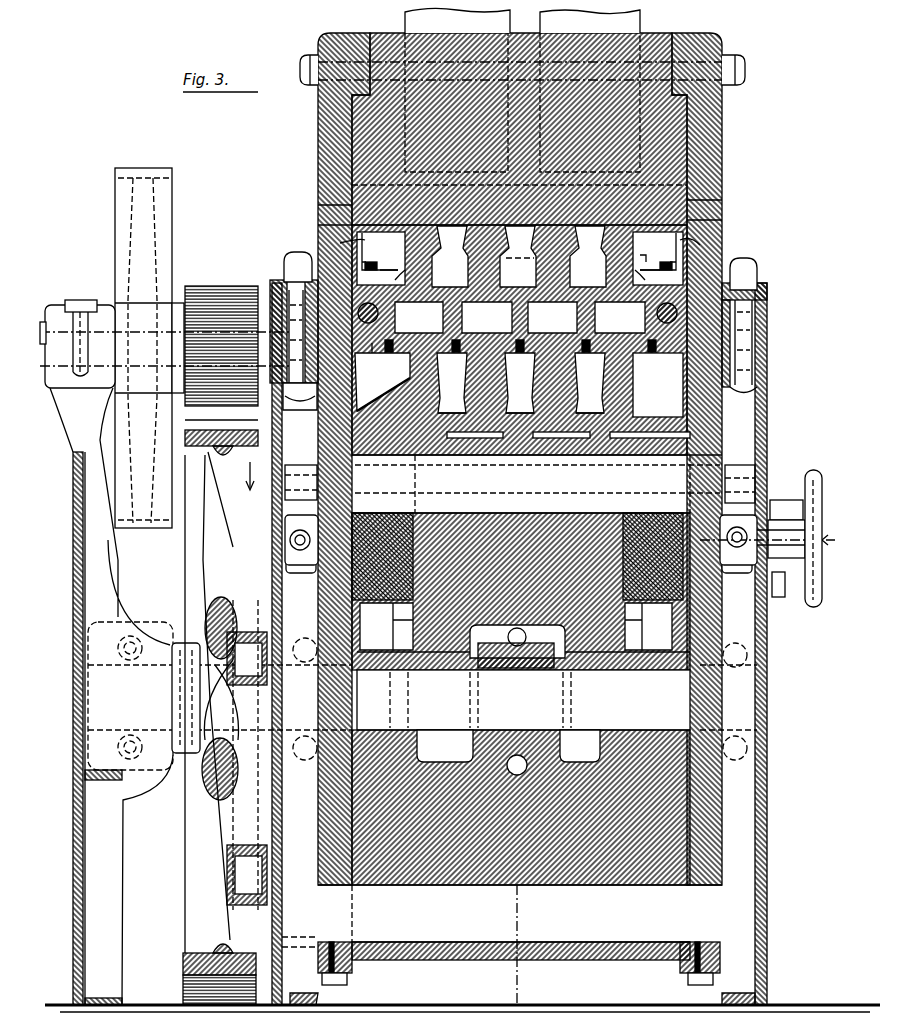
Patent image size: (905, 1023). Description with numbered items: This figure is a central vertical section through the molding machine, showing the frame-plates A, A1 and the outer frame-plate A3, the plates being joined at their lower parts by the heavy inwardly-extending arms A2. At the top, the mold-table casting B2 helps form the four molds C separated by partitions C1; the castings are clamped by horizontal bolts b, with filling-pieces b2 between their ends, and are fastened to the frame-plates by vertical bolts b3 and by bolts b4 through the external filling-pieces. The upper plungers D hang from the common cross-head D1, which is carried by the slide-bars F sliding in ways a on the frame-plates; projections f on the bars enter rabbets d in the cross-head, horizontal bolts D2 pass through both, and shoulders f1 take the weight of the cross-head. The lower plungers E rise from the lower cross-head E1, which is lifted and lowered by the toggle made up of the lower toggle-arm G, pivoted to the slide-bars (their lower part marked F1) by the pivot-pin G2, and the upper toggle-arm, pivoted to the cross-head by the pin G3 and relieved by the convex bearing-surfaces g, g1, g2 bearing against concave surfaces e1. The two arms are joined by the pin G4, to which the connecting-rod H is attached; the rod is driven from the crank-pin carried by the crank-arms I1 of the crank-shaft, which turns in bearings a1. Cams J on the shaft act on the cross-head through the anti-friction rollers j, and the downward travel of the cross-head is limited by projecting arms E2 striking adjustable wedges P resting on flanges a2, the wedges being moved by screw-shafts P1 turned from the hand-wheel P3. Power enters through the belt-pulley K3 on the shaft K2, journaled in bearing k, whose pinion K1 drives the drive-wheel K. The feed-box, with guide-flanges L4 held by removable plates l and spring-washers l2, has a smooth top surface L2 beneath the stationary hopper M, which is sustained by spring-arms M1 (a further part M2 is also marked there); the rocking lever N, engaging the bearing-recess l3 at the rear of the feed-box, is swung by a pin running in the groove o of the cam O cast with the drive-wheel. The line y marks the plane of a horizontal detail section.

The inwardly-extending projection f is at (350, 33).
The notch or rabbet d is at (372, 33).
The upper cross-head D1 is at (519, 109).
The spring-arm M1 is at (522, 20).
The horizontal bolt D2 is at (310, 56).
The feed-hopper M is at (522, 228).
The smooth horizontal top surface L2 is at (520, 258).
The removable plate l is at (517, 247).
The spring-washer l2 is at (520, 259).
The bearing-recess l3 is at (640, 263).
The mold-table casting B2 is at (740, 246).
The upper plunger D is at (466, 246).
The guide-flange L4 is at (520, 268).
The mold C is at (520, 317).
The partition C1 is at (520, 328).
The horizontal bolt b is at (369, 325).
The vertical bolt b3 is at (365, 368).
The lower plunger E is at (466, 376).
The concave bearing-surface e1 is at (521, 403).
The rocking lever N is at (382, 382).
The lower cross-head E1 is at (385, 420).
The convex cylindric bearing-surface g is at (447, 440).
The convex cylindric bearing-surface g1 is at (533, 440).
The convex cylindric bearing-surface g2 is at (612, 440).
The pivot-pin G3 is at (537, 484).
The pivot-pin G2 is at (520, 759).
The guide block F1 is at (382, 556).
The projecting arm E2 is at (520, 532).
The cam J is at (516, 626).
The anti-friction roller j is at (517, 611).
The connecting-rod H is at (517, 646).
The toggle pin G4 is at (523, 700).
The lower toggle-arm G is at (521, 807).
The crank-arm I1 is at (508, 754).
The inwardly-extending arm A2 is at (521, 963).
The guide groove or way a is at (320, 977).
The frame-plate A is at (767, 360).
The frame-plate A1 is at (300, 673).
The bolt b4 is at (287, 284).
The filling-piece b2 is at (272, 290).
The slide-bar F is at (318, 205).
The shoulder f1 is at (318, 225).
The plate M2 is at (340, 243).
The third frame-plate A3 is at (74, 609).
The bearing a1 is at (422, 696).
The horizontal flange a2 is at (519, 575).
The wedge P is at (285, 515).
The screw-shaft P1 is at (290, 540).
The hand-wheel P3 is at (806, 492).
The belt-pulley K3 is at (154, 233).
The bearing k is at (78, 318).
The pinion shaft K2 is at (46, 340).
The pinion K1 is at (216, 292).
The drive-wheel K is at (202, 486).
The cam O is at (230, 636).
The cam groove o is at (247, 755).
The section line y is at (245, 476).